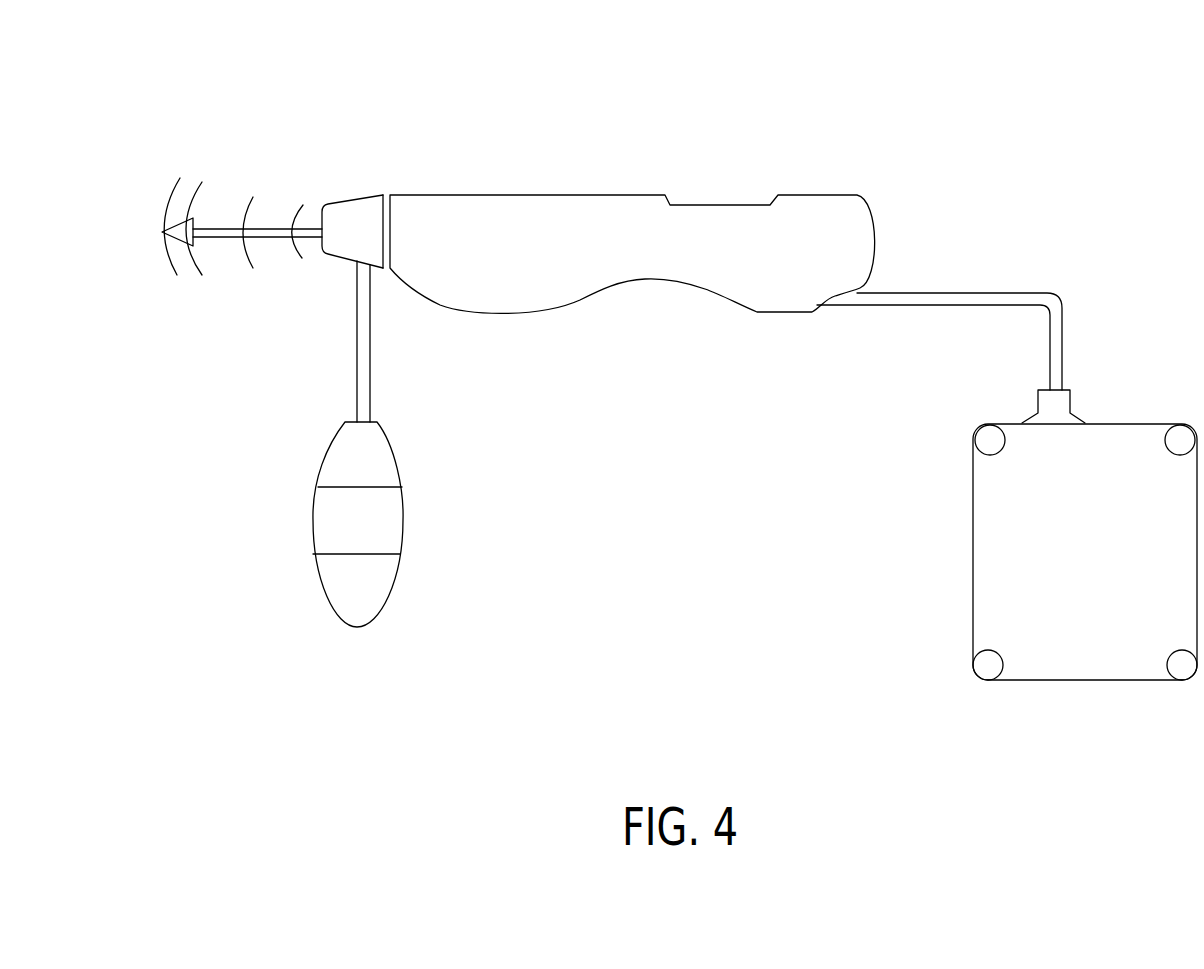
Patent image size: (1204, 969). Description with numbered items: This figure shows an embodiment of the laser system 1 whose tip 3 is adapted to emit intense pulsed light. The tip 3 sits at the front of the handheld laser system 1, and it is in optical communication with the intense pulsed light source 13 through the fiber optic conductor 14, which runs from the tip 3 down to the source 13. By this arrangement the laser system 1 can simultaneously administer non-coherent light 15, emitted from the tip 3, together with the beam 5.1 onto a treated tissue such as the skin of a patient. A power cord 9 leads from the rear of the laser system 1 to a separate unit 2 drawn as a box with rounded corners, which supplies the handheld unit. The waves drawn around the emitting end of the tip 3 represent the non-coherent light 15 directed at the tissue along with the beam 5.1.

The laser system 1 is at (530, 238).
The control unit 2 is at (1037, 513).
The tip 3 is at (342, 217).
The beam from laser 5 5.1 is at (273, 237).
The power cord 9 is at (947, 295).
The intense pulsed light source 13 is at (377, 532).
The fiber optic conductor 14 is at (362, 360).
The non-coherent light 15 is at (247, 203).